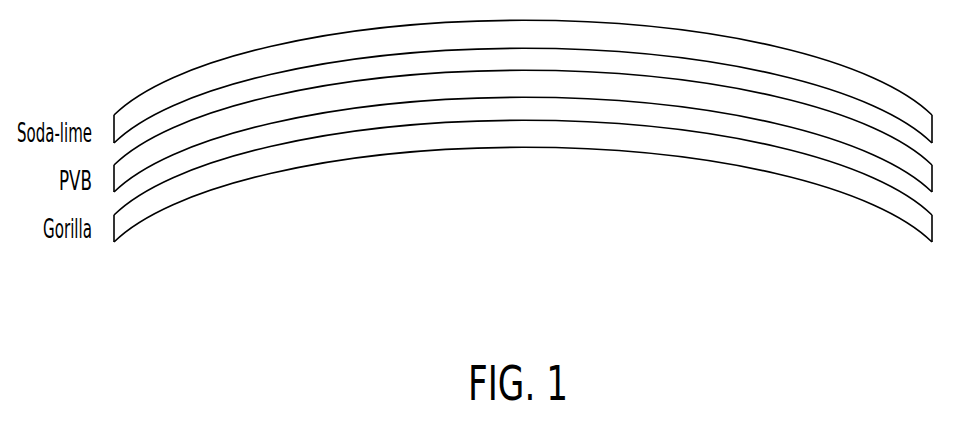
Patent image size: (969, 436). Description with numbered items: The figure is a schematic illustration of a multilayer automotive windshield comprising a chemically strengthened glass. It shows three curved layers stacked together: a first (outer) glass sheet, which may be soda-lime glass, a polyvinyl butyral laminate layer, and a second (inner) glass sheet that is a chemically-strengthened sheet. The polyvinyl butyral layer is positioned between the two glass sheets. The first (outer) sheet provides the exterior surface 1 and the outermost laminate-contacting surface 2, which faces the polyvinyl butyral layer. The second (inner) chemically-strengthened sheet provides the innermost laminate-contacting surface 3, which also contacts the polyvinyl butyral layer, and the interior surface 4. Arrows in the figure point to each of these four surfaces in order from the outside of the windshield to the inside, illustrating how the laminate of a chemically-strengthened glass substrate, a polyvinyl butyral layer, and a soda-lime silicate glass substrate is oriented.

The exterior surface 1 is at (213, 80).
The outermost laminate-contacting surface 2 is at (440, 69).
The innermost laminate-contacting surface 3 is at (644, 143).
The interior surface 4 is at (848, 212).